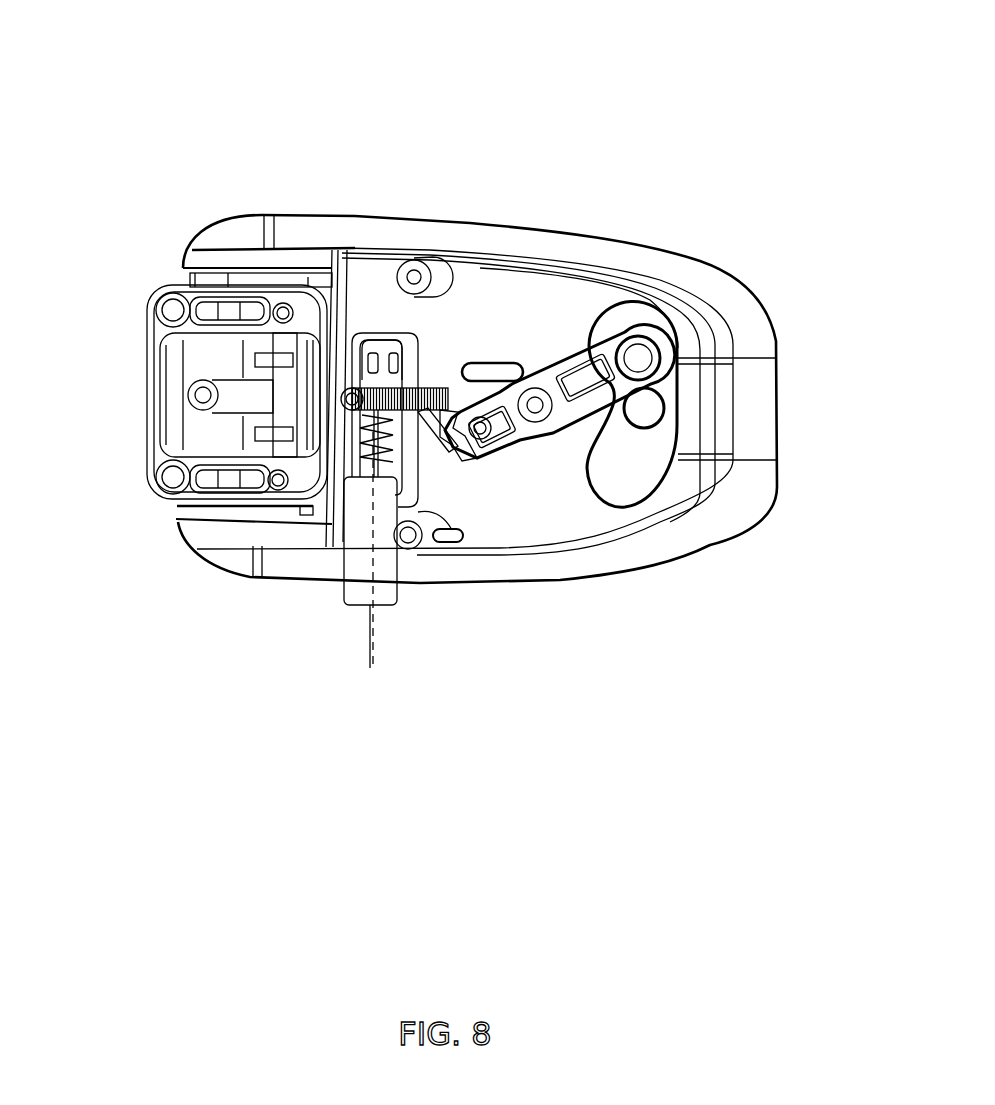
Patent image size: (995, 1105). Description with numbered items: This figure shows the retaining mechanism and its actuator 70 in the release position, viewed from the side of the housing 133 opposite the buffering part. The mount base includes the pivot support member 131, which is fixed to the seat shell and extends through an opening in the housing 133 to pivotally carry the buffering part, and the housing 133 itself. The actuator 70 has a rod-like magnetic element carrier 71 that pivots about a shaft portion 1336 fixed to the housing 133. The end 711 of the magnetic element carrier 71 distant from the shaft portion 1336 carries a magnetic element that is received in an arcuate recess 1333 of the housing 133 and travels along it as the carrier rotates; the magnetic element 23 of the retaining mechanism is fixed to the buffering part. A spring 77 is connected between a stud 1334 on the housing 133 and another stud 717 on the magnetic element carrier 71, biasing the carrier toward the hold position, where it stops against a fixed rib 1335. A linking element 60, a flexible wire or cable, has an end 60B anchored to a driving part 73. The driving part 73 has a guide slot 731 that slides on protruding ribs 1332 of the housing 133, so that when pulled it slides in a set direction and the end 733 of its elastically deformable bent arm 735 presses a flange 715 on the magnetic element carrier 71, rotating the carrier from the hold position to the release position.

The pivot support member 131 is at (178, 288).
The housing 133 is at (467, 327).
The protruding rib 1332 is at (353, 337).
The recess 1333 is at (636, 460).
The stud 1334 is at (273, 463).
The fixed rib 1335 is at (480, 362).
The shaft portion 1336 is at (540, 418).
The magnetic element 23 is at (647, 407).
The actuator 70 is at (591, 418).
The magnetic element carrier 71 is at (593, 421).
The end of the magnetic element carrier 711 is at (643, 353).
The flange 715 is at (441, 433).
The stud 717 is at (484, 442).
The driving part 73 is at (377, 411).
The guide slot 731 is at (388, 345).
The end of the bent arm 733 is at (421, 418).
The bent arm 735 is at (421, 545).
The spring 77 is at (352, 435).
The linking element 60 is at (368, 643).
The end of the linking element 60B is at (373, 490).